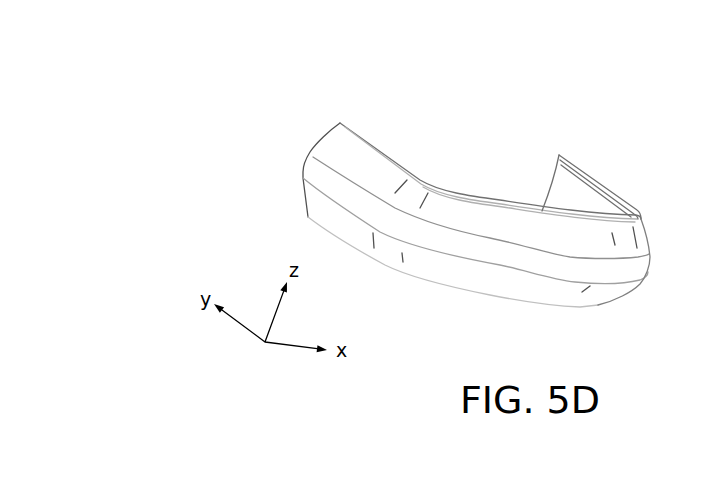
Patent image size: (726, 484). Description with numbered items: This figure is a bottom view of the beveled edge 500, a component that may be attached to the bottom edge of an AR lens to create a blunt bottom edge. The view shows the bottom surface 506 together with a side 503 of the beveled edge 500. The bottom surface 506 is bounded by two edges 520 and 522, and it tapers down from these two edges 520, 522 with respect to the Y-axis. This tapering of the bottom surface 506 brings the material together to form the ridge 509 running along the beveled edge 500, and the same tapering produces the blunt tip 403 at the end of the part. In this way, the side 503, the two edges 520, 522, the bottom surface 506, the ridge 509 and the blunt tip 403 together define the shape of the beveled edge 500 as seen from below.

The beveled edge 500 is at (453, 211).
The side 503 is at (332, 144).
The edge 520 is at (498, 188).
The ridge 509 is at (338, 192).
The blunt tip 403 is at (558, 270).
The edge 522 is at (445, 294).
The bottom surface 506 is at (610, 291).